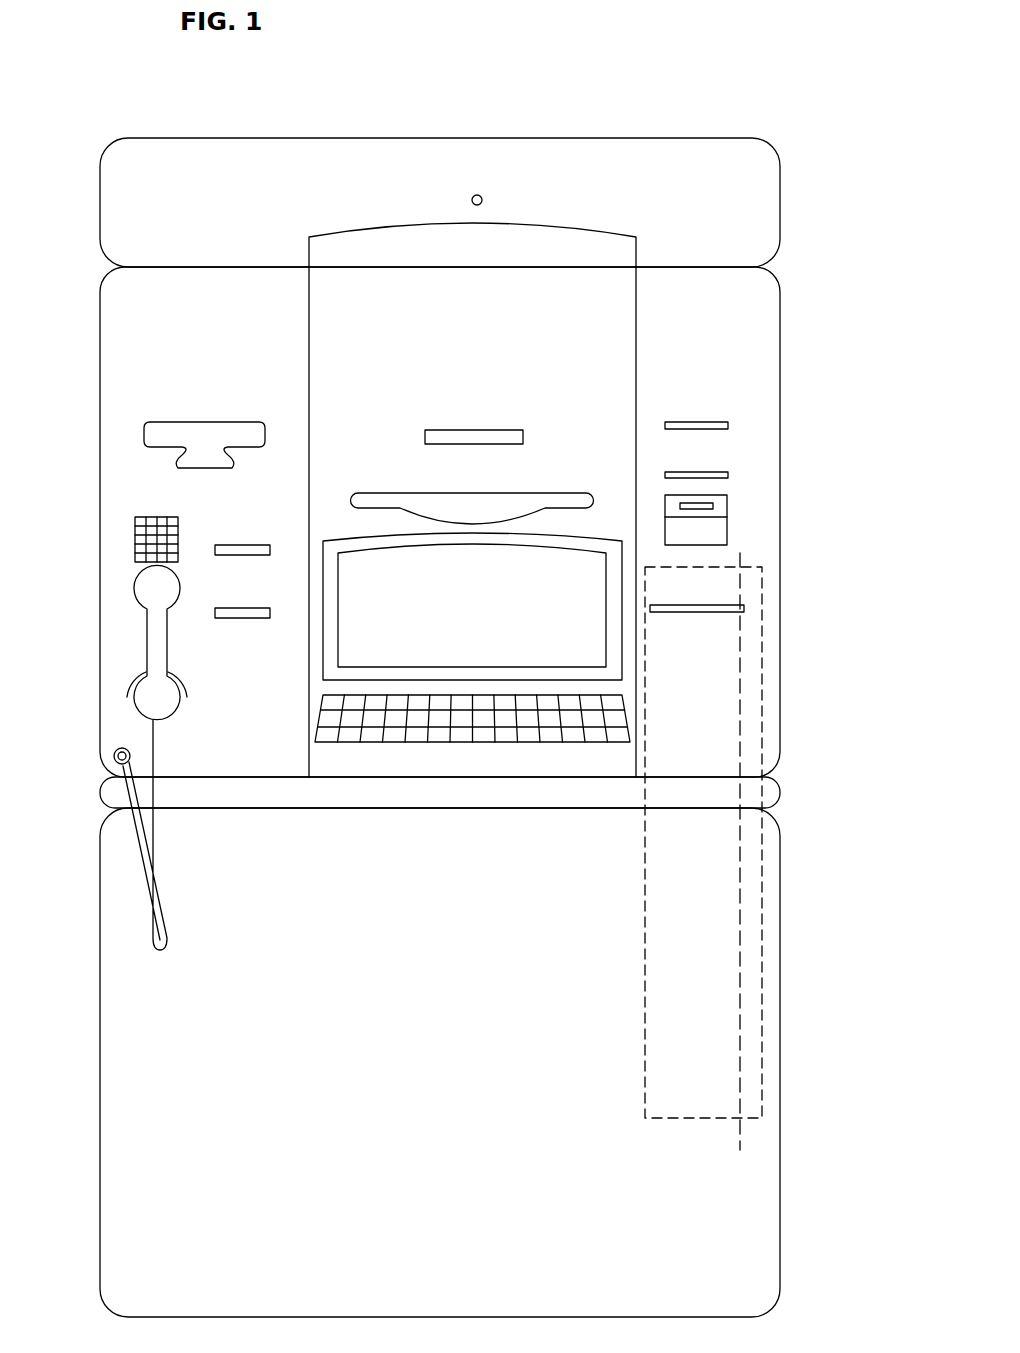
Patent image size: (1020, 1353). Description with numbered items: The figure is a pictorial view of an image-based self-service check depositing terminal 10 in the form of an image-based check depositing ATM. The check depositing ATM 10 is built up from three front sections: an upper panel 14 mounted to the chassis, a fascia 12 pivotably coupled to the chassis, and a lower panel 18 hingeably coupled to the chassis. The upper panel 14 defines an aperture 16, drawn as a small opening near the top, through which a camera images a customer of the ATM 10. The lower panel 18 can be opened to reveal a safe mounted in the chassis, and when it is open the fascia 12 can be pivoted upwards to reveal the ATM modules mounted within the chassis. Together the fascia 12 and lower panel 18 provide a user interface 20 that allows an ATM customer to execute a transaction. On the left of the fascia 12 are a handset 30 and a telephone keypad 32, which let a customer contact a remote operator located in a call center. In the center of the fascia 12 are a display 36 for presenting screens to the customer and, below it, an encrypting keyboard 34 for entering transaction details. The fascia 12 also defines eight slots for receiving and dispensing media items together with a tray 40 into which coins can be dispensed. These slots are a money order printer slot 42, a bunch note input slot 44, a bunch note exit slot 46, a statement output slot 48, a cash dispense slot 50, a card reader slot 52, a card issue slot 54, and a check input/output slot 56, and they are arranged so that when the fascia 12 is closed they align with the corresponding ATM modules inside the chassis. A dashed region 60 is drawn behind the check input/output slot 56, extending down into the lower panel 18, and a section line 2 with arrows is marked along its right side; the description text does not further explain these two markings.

The image-based self-service check depositing terminal 10 is at (731, 46).
The fascia 12 is at (127, 326).
The upper panel 14 is at (755, 198).
The aperture 16 is at (482, 196).
The lower panel 18 is at (127, 1220).
The user interface 20 is at (412, 1062).
The handset 30 is at (147, 645).
The telephone keypad 32 is at (150, 533).
The encrypting keyboard 34 is at (320, 710).
The display 36 is at (492, 615).
The tray 40 is at (728, 505).
The money order printer slot 42 is at (202, 433).
The bunch note input slot 44 is at (240, 545).
The bunch note exit slot 46 is at (235, 618).
The statement output slot 48 is at (487, 430).
The cash dispense slot 50 is at (468, 510).
The card reader slot 52 is at (710, 422).
The card issue slot 54 is at (728, 475).
The check input/output slot 56 is at (700, 613).
The internal compartment 60 is at (762, 938).
The section line 2- 2 is at (742, 555).